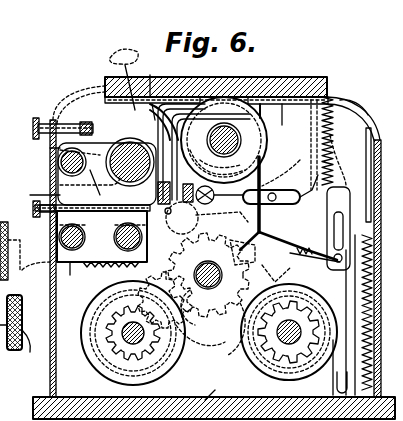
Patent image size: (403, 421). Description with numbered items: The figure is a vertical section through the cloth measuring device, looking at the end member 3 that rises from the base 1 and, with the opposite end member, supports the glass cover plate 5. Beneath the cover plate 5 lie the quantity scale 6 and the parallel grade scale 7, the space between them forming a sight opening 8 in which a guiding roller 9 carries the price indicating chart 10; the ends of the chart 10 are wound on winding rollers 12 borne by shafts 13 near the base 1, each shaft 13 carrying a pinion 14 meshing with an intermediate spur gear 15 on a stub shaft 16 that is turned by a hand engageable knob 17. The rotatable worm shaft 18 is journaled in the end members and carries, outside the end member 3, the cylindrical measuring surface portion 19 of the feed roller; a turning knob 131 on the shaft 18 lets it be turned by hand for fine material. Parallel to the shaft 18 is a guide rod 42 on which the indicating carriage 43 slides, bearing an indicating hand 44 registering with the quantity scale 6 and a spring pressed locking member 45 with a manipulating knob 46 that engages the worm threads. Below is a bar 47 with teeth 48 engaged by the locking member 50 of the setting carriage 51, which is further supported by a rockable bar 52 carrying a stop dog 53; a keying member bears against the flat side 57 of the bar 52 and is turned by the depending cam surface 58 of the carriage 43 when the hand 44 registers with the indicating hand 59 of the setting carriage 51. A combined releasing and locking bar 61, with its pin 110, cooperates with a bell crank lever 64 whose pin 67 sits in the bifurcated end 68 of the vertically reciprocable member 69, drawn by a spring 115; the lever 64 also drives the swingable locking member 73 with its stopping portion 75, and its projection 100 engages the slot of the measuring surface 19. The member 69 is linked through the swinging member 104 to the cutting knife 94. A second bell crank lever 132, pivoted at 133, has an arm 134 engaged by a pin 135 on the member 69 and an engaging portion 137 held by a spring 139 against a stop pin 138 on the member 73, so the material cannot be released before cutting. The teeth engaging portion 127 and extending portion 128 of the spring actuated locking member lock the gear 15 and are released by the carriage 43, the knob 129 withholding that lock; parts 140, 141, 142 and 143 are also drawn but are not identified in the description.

The base 1 is at (193, 380).
The end member 3 is at (214, 400).
The glass cover plate 5 is at (243, 97).
The quantity scale 6 is at (149, 90).
The grade scale 7 is at (283, 102).
The longitudinal sight opening 8 is at (258, 98).
The guiding roller 9 is at (262, 150).
The price indicating chart 10 is at (281, 169).
The winding rollers 12 is at (98, 355).
The shafts 13 is at (122, 333).
The pinion 14 is at (125, 345).
The spur gear 15 is at (210, 334).
The stub shaft 16 is at (207, 275).
The hand engageable knob 17 is at (18, 255).
The worm shaft 18 is at (110, 158).
The measuring surface portion 19 is at (7, 335).
The guide rod 42 is at (58, 162).
The indicating carriage 43 is at (50, 150).
The indicating hand 44 is at (185, 100).
The locking member 45 is at (124, 79).
The manipulating knob 46 is at (30, 118).
The horizontally extending bar 47 is at (105, 268).
The teeth 48 is at (165, 300).
The spring pressed locking member 50 is at (102, 236).
The setting carriage 51 is at (124, 333).
The rockable bar 52 is at (65, 276).
The stop dog 53 is at (32, 192).
The flat side 57 is at (50, 231).
The depending cam surface 58 is at (60, 186).
The indicating hand 59 is at (215, 98).
The combined releasing and locking bar 61 is at (110, 135).
The bell crank lever 64 is at (219, 195).
The pin 67 is at (293, 183).
The bifurcated end 68 is at (272, 190).
The vertically reciprocable member 69 is at (345, 188).
The swingable locking member 73 is at (207, 393).
The stopping portion 75 is at (316, 266).
The cutting knife 94 is at (367, 180).
The projection 100 is at (232, 145).
The swinging member 104 is at (335, 370).
The pin 110 is at (168, 230).
The spring 115 is at (354, 109).
The teeth engaging portion 127 is at (234, 133).
The extending portion 128 is at (222, 135).
The knob 129 is at (33, 266).
The turning knob 131 is at (30, 330).
The bell crank lever 132 is at (236, 252).
The pivot 133 is at (327, 105).
The arm 134 is at (341, 322).
The pin 135 is at (363, 312).
The engaging portion 137 is at (219, 275).
The stop pin 138 is at (203, 307).
The spring 139 is at (276, 273).
The base member 140 is at (11, 412).
The cam 141 is at (207, 219).
The wire 142 is at (340, 133).
The rod 143 is at (310, 130).